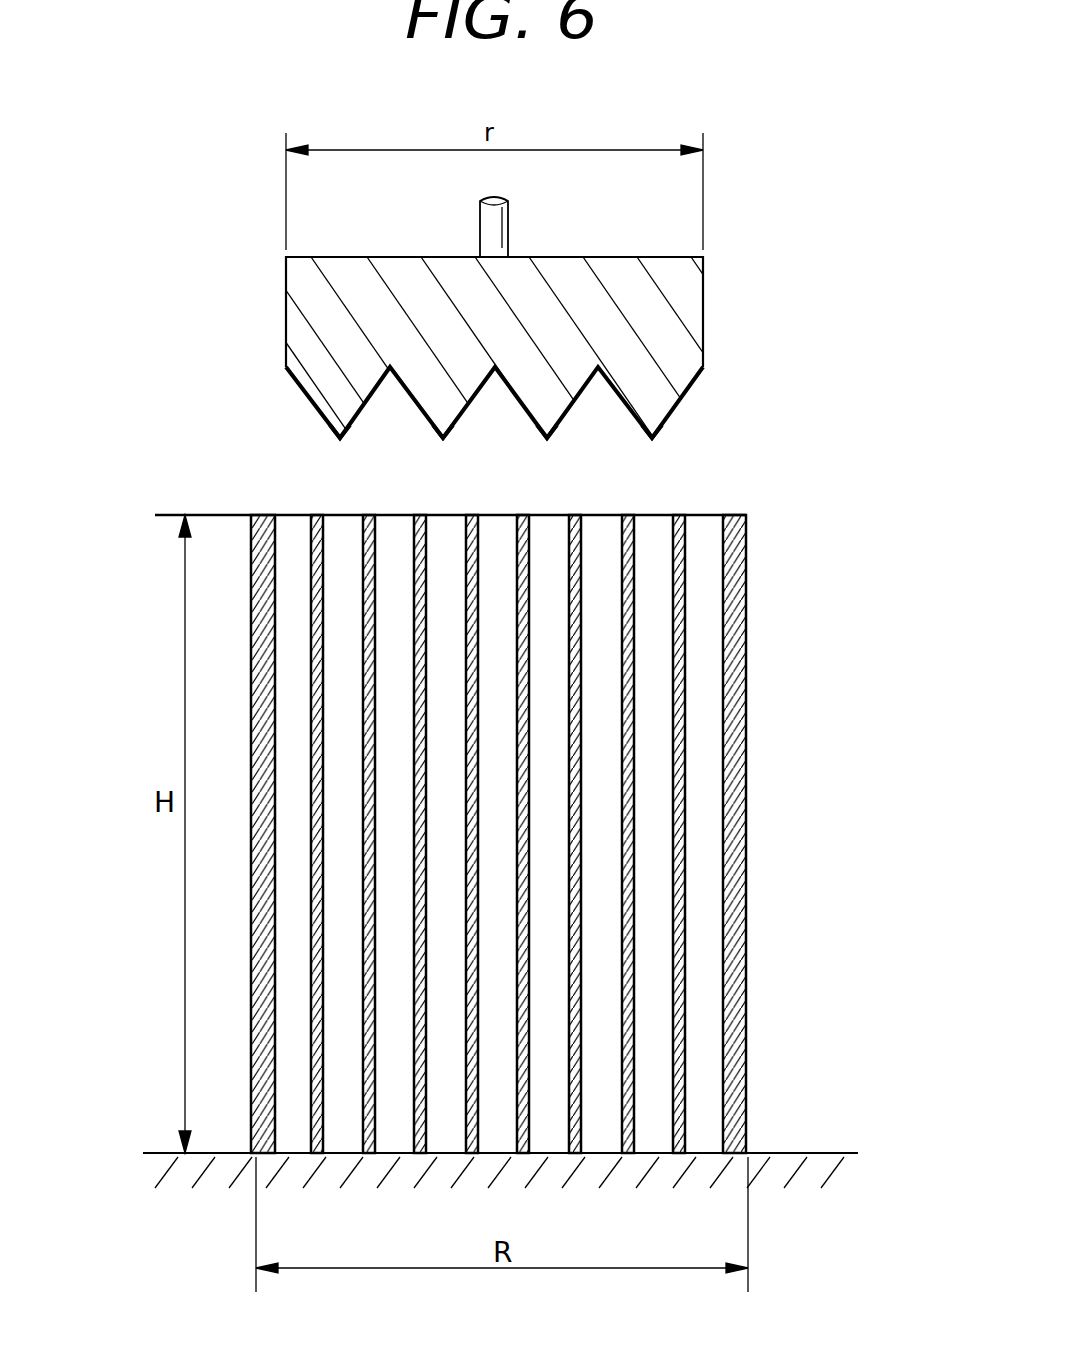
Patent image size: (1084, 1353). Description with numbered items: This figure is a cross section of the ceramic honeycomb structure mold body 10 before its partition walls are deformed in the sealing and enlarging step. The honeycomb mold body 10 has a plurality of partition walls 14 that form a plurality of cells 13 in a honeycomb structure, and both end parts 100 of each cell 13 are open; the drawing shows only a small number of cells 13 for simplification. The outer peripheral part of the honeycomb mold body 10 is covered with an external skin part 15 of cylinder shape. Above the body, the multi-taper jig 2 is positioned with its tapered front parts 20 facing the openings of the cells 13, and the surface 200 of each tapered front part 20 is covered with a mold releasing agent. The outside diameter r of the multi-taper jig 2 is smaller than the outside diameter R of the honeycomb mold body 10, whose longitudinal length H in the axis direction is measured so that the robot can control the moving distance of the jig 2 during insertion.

The multi-taper jig 2 is at (528, 327).
The tapered front parts 20 is at (507, 366).
The surface of the tapered front part 200 is at (517, 436).
The end parts of each cell 100 is at (536, 487).
The ceramic honeycomb structure mold body 10 is at (505, 834).
The cells 13 is at (478, 834).
The partition walls 14 is at (489, 834).
The external skin part 15 is at (465, 834).